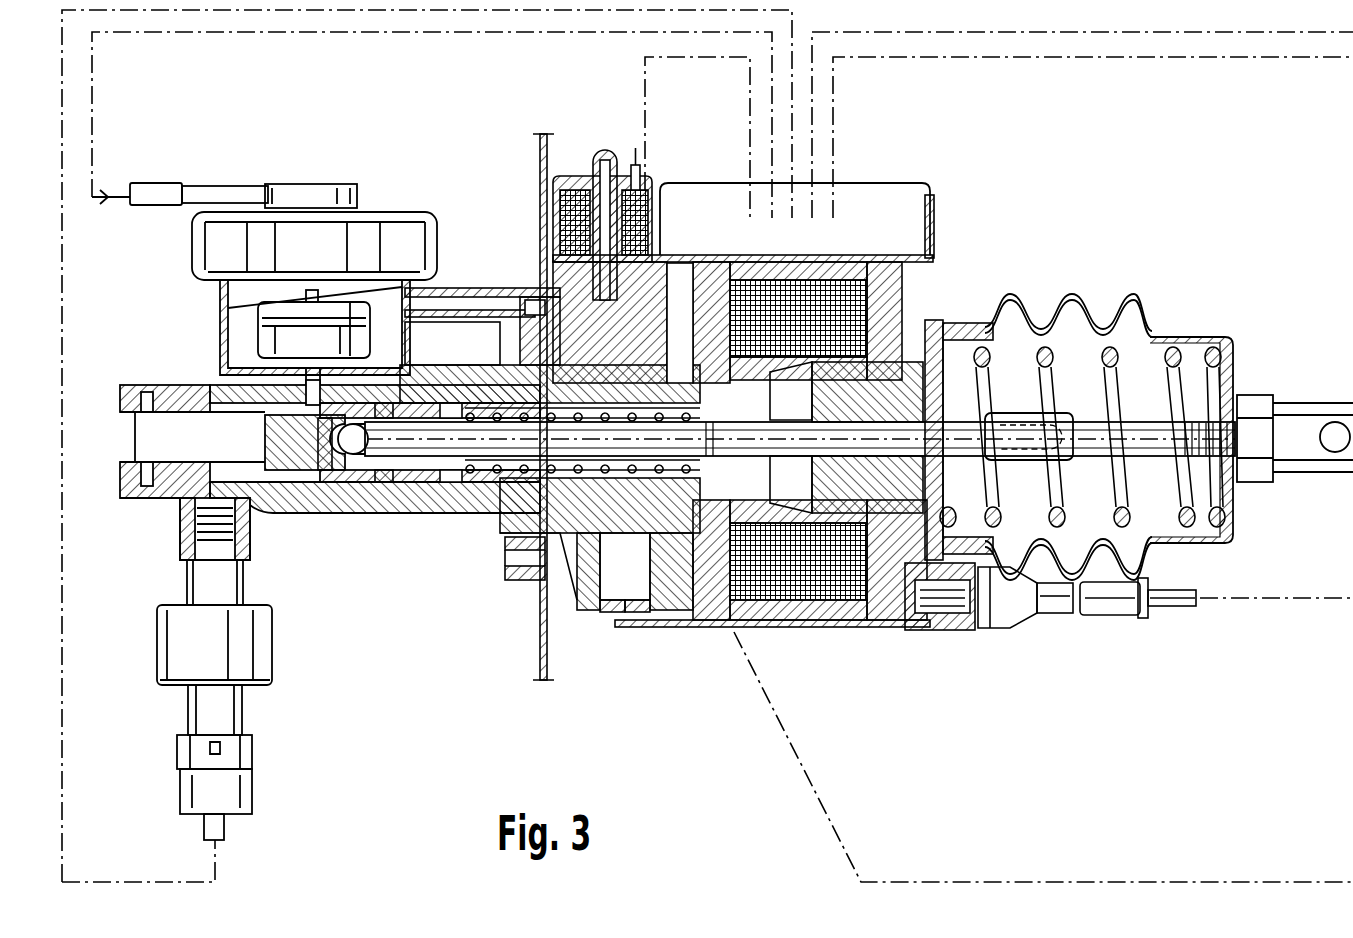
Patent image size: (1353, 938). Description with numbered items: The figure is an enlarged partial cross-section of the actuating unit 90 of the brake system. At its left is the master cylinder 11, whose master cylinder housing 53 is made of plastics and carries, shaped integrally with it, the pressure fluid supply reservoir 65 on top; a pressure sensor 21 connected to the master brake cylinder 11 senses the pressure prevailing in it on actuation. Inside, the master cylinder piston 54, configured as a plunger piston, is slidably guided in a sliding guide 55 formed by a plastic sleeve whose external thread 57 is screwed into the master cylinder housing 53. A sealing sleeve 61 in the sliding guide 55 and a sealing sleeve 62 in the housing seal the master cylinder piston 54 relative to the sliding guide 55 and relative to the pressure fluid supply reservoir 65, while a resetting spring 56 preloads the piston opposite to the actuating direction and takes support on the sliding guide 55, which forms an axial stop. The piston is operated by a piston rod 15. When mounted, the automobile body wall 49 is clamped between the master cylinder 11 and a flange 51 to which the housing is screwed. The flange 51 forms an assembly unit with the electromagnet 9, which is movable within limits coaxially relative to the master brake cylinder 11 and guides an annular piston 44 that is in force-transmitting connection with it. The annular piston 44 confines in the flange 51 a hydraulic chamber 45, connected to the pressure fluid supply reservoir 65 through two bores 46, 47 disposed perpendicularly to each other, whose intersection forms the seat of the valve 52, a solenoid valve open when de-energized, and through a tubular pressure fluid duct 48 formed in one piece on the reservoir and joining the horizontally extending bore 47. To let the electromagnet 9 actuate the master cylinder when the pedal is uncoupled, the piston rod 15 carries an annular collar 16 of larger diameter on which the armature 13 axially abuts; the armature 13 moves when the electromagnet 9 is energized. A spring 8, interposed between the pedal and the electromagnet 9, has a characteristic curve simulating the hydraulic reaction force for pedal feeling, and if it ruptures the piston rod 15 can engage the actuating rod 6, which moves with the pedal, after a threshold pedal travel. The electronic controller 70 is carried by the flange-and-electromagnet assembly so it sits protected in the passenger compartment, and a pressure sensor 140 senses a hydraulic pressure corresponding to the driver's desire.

The actuating rod 6 is at (1169, 456).
The spring 8 is at (1086, 416).
The electromagnet 9 is at (806, 235).
The master cylinder 11 is at (324, 461).
The armature 13 is at (812, 592).
The piston rod 15 is at (959, 420).
The annular collar 16 is at (849, 438).
The pressure sensor 21 is at (250, 722).
The annular piston 44 is at (641, 541).
The hydraulic chamber 45 is at (621, 642).
The bore 46 is at (671, 323).
The horizontally extending bore 47 is at (528, 268).
The tubular pressure fluid duct 48 is at (482, 244).
The automobile body wall 49 is at (509, 407).
The flange 51 is at (657, 642).
The valve 52 is at (602, 198).
The master cylinder housing 53 is at (549, 492).
The master cylinder piston 54 is at (376, 490).
The sliding guide 55 is at (450, 490).
The resetting spring 56 is at (511, 555).
The external thread 57 is at (452, 343).
The sealing sleeve 61 is at (325, 497).
The sealing sleeve 62 is at (316, 496).
The pressure fluid supply reservoir 65 is at (299, 298).
The electronic controller 70 is at (795, 184).
The actuating unit 90 is at (956, 185).
The pressure sensor 140 is at (505, 267).